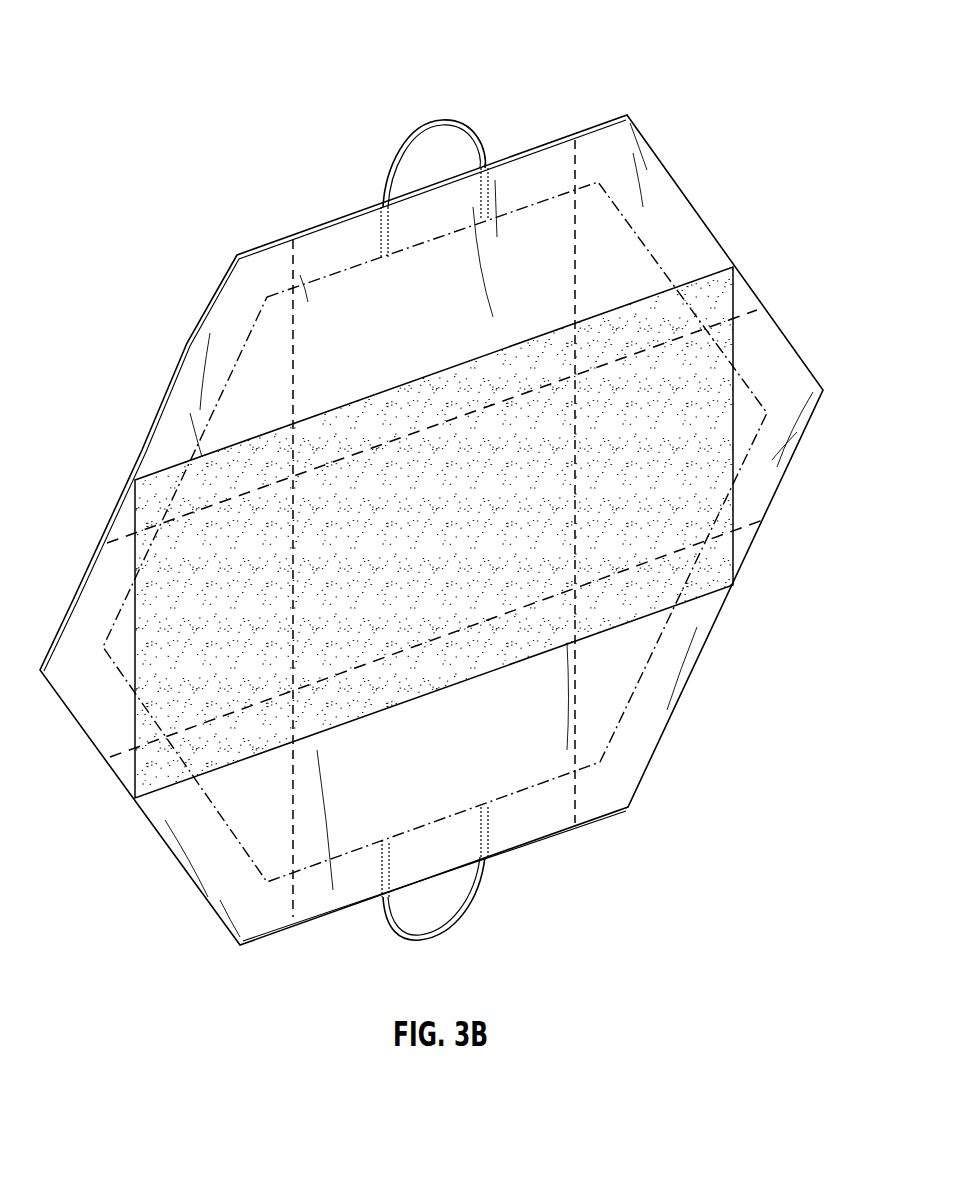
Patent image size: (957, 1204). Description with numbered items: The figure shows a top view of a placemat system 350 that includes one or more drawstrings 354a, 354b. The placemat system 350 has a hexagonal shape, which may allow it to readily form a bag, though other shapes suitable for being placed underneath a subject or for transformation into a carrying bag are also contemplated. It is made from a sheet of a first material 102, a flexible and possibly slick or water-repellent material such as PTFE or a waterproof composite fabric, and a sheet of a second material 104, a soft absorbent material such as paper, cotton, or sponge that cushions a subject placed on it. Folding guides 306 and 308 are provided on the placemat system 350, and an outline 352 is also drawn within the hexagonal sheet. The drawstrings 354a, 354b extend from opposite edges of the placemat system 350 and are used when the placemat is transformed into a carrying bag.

The placemat system 350 is at (448, 54).
The first material 102 is at (787, 367).
The second material 104 is at (717, 290).
The folding guide 306 is at (298, 262).
The folding guide 308 is at (717, 322).
The inner liner outline 352 is at (643, 238).
The drawstring 354a is at (445, 118).
The drawstring 354b is at (442, 934).